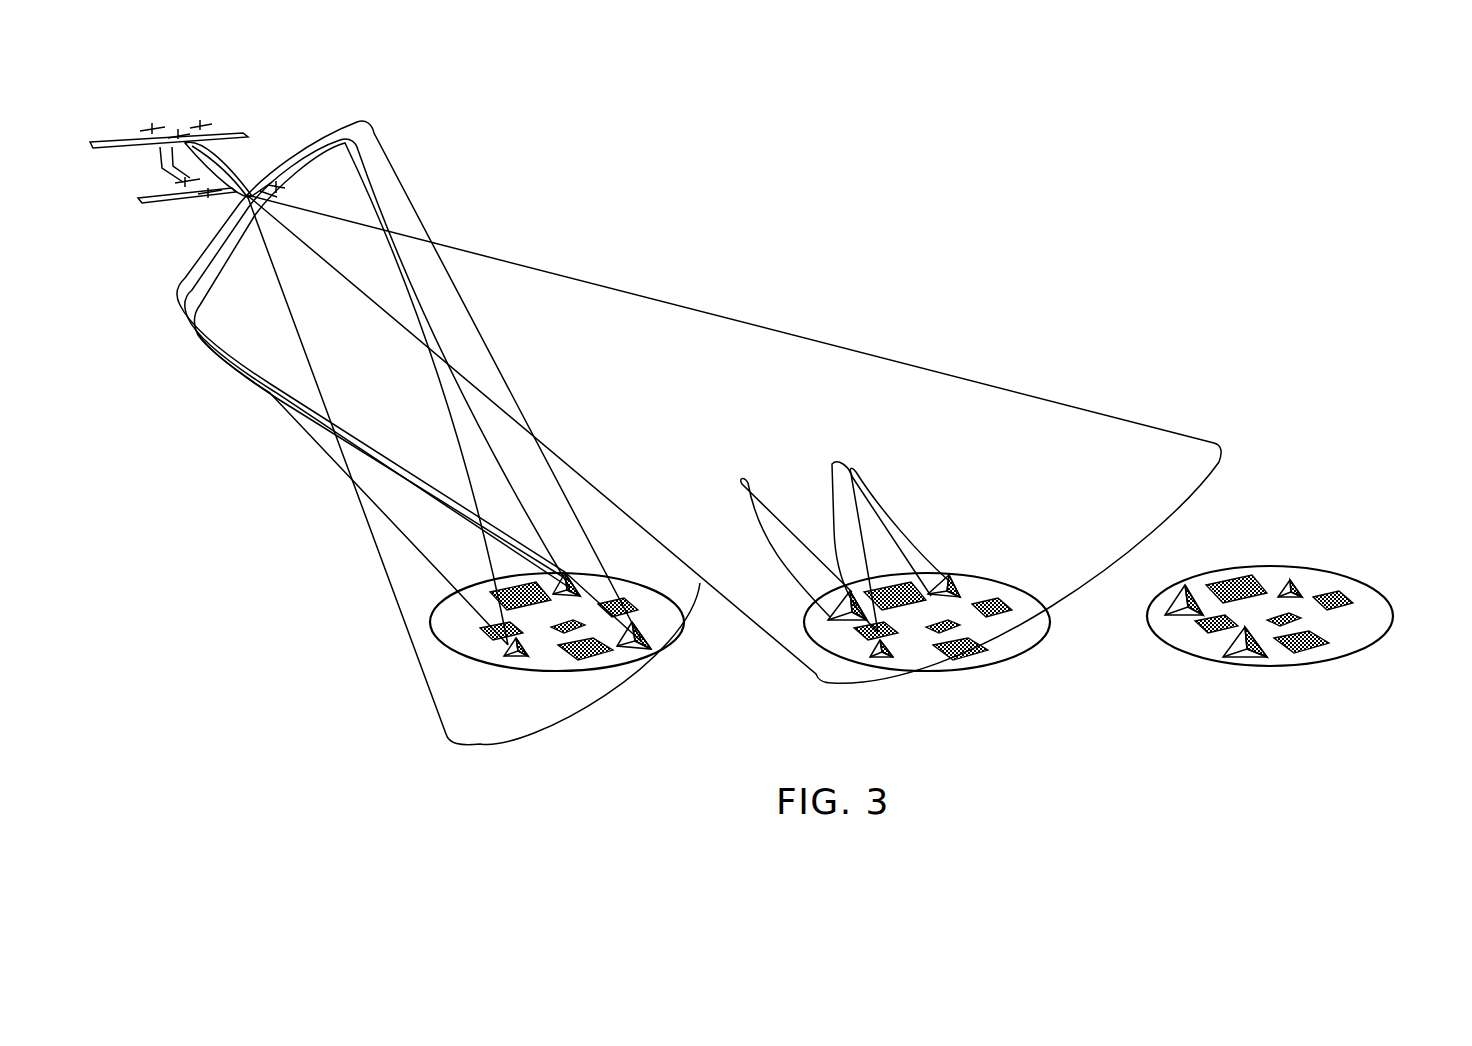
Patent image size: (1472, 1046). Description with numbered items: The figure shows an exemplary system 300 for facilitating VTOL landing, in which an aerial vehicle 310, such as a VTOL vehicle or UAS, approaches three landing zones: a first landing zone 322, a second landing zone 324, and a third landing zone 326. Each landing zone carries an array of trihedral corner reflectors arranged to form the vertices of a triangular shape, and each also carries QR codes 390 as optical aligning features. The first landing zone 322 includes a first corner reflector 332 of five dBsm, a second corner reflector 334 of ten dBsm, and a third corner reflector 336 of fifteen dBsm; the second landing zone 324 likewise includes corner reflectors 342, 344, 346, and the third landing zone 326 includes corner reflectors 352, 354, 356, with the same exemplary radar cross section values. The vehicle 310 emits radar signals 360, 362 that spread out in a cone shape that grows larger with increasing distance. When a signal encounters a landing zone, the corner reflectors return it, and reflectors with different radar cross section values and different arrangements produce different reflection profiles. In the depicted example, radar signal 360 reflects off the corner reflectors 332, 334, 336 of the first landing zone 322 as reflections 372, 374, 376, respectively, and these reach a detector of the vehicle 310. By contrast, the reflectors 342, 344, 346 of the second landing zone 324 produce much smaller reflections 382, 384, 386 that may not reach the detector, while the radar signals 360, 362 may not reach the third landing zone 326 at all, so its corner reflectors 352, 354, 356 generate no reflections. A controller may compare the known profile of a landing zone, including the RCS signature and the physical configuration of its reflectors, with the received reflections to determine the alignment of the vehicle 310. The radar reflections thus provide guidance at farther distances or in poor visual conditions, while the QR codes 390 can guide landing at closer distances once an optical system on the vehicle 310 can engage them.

The system 300 is at (870, 250).
The vehicle 310 is at (232, 173).
The first landing zone 322 is at (440, 622).
The second landing zone 324 is at (1047, 620).
The third landing zone 326 is at (1387, 604).
The first corner reflector 332 is at (508, 657).
The second corner reflector 334 is at (578, 582).
The third corner reflector 336 is at (650, 647).
The first corner reflector 342 is at (870, 665).
The second corner reflector 344 is at (958, 580).
The third corner reflector 346 is at (828, 605).
The first corner reflector 352 is at (1288, 579).
The second corner reflector 354 is at (1246, 659).
The third corner reflector 356 is at (1189, 586).
The radar signal 360 is at (395, 577).
The radar signal 362 is at (693, 320).
The reflection 372 is at (380, 498).
The reflection 374 is at (483, 448).
The reflection 376 is at (525, 474).
The reflection 382 is at (838, 522).
The reflection 384 is at (880, 533).
The reflection 386 is at (768, 478).
The QR codes 390 is at (603, 650).